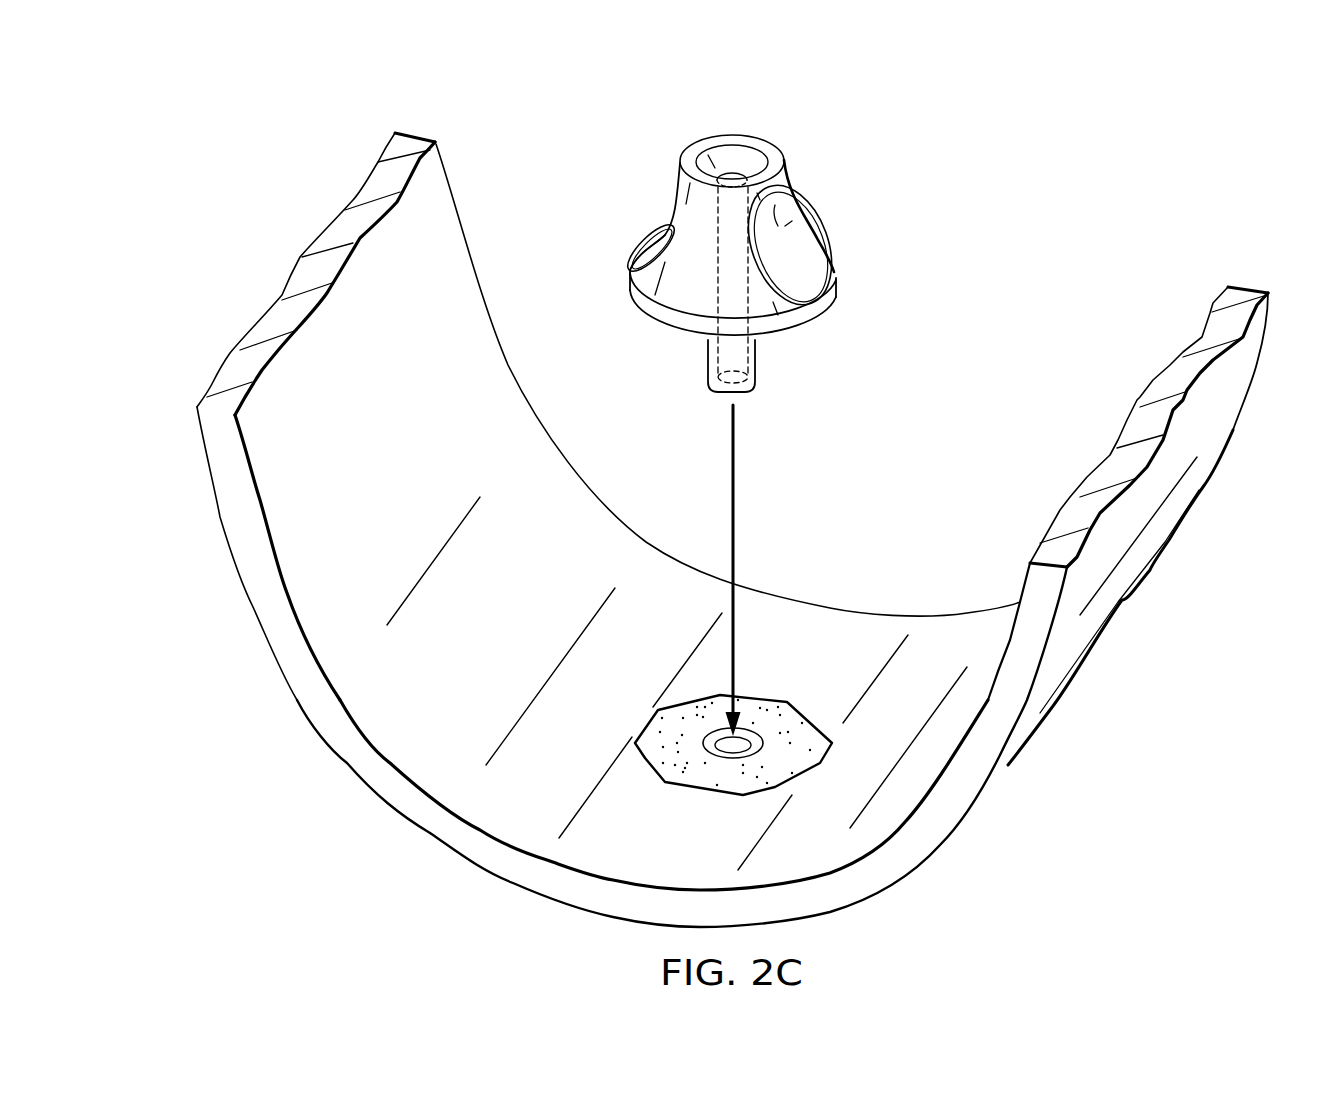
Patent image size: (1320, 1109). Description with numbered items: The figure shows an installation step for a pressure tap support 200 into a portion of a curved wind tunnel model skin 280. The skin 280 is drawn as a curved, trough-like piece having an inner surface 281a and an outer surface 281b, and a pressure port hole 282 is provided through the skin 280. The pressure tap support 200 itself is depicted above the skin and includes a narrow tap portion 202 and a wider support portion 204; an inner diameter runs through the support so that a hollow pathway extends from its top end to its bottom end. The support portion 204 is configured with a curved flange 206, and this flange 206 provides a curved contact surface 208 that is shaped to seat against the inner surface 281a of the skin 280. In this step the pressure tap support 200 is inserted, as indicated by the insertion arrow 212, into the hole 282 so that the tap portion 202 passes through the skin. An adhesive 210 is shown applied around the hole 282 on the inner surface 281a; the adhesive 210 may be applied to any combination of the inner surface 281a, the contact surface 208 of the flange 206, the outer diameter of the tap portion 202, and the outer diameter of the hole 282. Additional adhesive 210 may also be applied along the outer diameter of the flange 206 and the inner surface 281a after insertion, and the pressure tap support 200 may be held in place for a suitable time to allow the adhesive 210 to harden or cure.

The pressure tap support 200 is at (729, 232).
The tap portion 202 is at (775, 366).
The support portion 204 is at (835, 185).
The curved flange 206 is at (613, 247).
The contact surface 208 is at (690, 341).
The adhesive 210 is at (708, 805).
The insertion 212 is at (736, 512).
The wind tunnel model skin 280 is at (700, 530).
The inner surface 281a is at (292, 553).
The outer surface 281b is at (220, 518).
The pressure port hole 282 is at (768, 705).